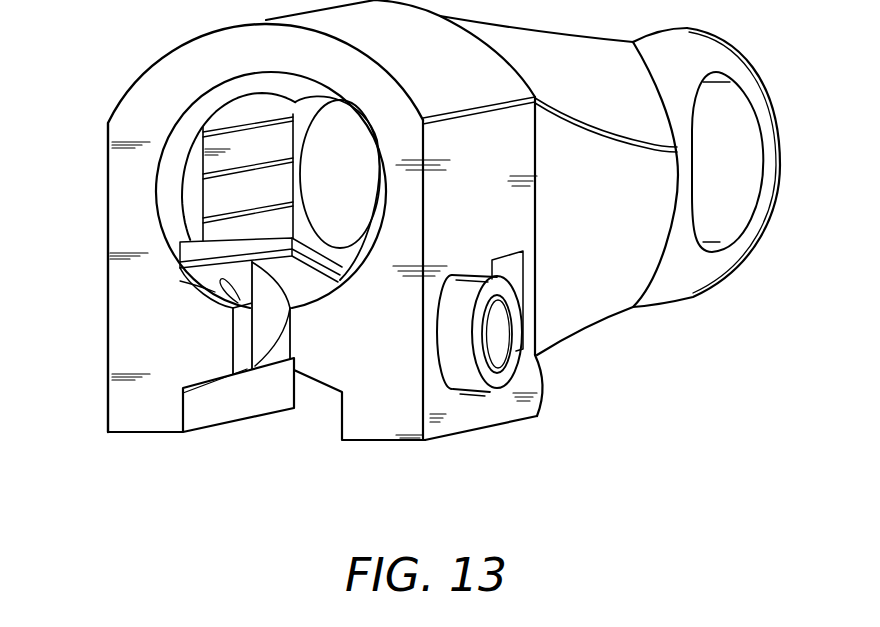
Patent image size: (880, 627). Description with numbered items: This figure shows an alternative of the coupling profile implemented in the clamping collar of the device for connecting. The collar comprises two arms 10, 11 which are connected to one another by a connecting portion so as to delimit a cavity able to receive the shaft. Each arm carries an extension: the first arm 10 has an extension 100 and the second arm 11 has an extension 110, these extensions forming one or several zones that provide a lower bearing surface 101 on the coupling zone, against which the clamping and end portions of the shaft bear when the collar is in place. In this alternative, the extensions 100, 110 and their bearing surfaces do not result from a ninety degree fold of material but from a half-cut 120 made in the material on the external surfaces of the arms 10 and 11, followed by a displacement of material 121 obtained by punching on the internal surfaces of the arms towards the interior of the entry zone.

The arm 10 is at (99, 391).
The arm 11 is at (424, 448).
The extension 100 is at (215, 327).
The lower bearing surface 101 is at (180, 242).
The extension 110 is at (301, 342).
The half-cut 120 is at (523, 271).
The displacement of material 121 is at (275, 310).